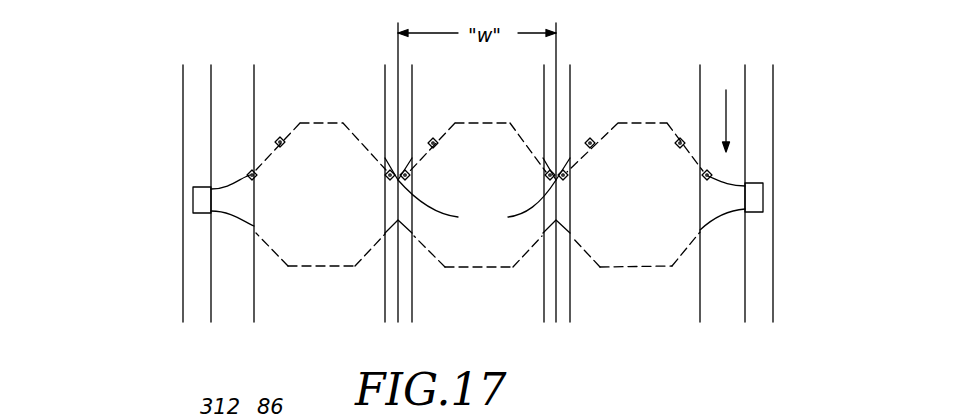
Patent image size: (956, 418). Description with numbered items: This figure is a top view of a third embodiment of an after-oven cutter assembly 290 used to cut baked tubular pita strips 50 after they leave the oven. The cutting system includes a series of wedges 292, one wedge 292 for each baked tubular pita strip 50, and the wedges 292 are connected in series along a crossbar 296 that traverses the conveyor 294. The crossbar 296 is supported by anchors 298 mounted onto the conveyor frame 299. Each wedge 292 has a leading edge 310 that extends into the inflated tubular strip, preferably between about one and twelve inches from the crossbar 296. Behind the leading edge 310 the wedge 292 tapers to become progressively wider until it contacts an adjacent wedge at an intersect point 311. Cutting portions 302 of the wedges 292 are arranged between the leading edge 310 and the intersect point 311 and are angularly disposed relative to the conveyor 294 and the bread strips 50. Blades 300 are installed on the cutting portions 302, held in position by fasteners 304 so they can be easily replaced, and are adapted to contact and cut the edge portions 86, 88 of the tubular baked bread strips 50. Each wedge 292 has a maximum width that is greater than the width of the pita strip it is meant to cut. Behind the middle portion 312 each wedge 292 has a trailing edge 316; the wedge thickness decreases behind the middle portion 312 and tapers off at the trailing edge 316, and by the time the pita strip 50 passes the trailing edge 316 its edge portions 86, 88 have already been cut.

The after-oven cutter assembly 290 is at (783, 106).
The wedge 292 is at (337, 177).
The conveyor 294 is at (738, 273).
The crossbar 296 is at (747, 178).
The anchor 298 is at (203, 214).
The conveyor frame 299 is at (197, 275).
The blade 300 is at (259, 150).
The cutting portion 302 is at (275, 172).
The fastener 304 is at (277, 137).
The leading edge 310 is at (637, 118).
The intersect point 311 is at (477, 195).
The middle portion 312 is at (230, 200).
The trailing edge 316 is at (298, 268).
The baked tubular pita strip 50 is at (342, 112).
The edge portion 86 is at (412, 105).
The edge portion 88 is at (543, 78).